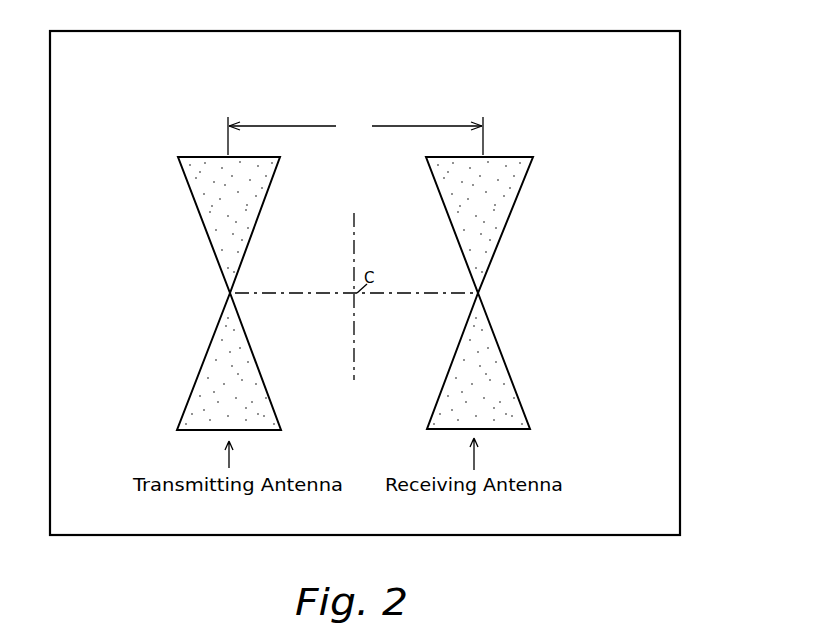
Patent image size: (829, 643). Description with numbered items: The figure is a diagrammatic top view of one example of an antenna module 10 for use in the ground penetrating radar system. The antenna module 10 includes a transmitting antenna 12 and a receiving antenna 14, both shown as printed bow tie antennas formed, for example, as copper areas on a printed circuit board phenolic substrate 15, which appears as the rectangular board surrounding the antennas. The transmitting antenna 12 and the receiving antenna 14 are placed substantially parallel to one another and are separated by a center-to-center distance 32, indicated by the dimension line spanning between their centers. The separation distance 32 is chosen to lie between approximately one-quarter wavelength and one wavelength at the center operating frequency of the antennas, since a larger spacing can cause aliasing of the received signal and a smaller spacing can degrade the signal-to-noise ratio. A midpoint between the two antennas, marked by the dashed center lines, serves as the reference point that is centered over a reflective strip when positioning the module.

The antenna module 10 is at (683, 92).
The transmitting antenna 12 is at (193, 155).
The receiving antenna 14 is at (518, 152).
The printed circuit board phenolic substrate 15 is at (660, 241).
The center-to-center distance 32 is at (355, 135).